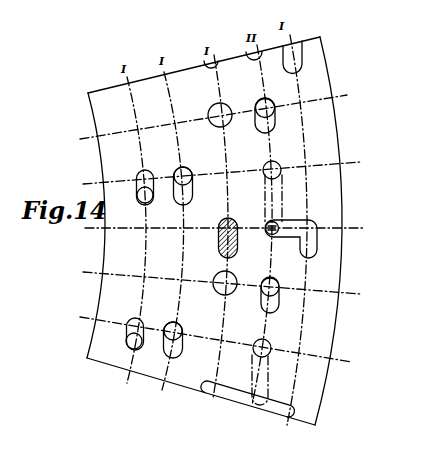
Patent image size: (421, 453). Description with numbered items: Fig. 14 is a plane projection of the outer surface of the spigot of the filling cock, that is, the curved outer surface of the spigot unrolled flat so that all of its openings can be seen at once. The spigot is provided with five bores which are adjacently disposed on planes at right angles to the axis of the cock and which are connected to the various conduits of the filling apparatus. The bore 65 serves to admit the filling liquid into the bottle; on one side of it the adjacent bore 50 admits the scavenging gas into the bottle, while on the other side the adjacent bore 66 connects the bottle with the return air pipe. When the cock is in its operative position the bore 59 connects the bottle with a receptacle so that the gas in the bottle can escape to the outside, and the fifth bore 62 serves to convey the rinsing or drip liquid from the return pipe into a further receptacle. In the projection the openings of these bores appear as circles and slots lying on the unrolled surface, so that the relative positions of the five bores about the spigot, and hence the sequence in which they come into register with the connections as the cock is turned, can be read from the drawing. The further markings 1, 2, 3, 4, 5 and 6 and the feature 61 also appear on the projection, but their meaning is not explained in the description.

The pattern plate 1 is at (214, 229).
The reference line 2 is at (218, 113).
The reference line 3 is at (226, 168).
The reference line 4 is at (229, 228).
The reference line 5 is at (226, 287).
The reference line 6 is at (219, 344).
The bore 50 is at (187, 171).
The bore 59 is at (140, 184).
The notch 61 is at (227, 60).
The bore 62 is at (275, 183).
The bore 65 is at (222, 199).
The bore 66 is at (266, 109).